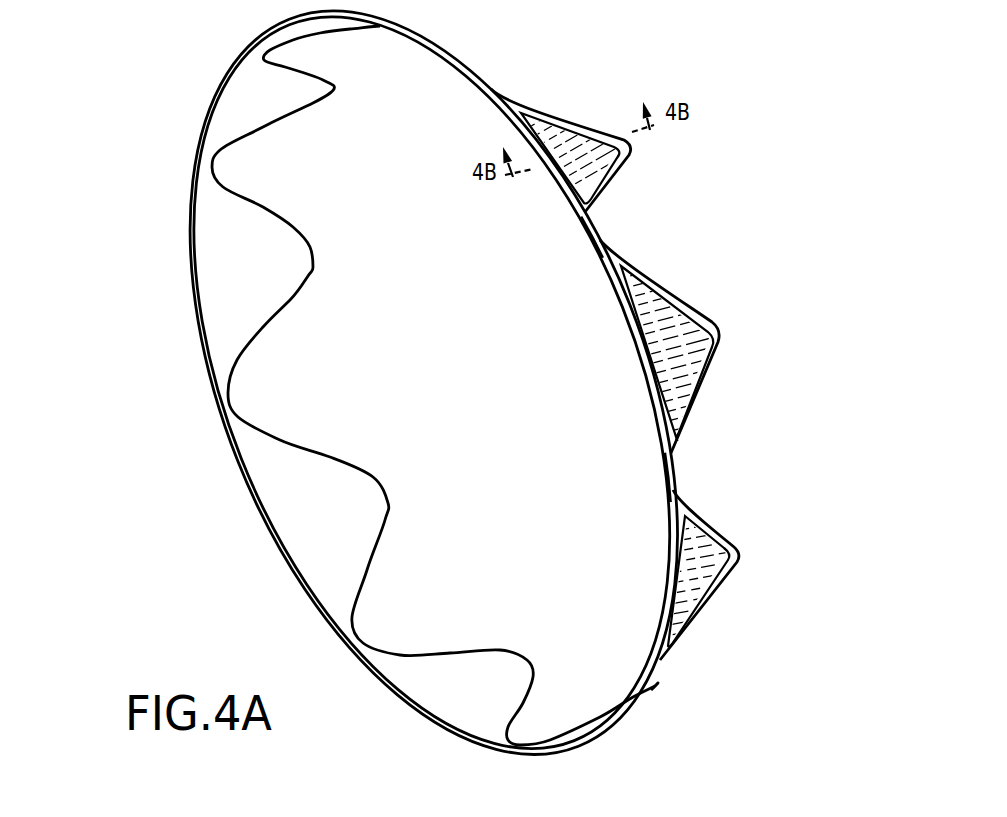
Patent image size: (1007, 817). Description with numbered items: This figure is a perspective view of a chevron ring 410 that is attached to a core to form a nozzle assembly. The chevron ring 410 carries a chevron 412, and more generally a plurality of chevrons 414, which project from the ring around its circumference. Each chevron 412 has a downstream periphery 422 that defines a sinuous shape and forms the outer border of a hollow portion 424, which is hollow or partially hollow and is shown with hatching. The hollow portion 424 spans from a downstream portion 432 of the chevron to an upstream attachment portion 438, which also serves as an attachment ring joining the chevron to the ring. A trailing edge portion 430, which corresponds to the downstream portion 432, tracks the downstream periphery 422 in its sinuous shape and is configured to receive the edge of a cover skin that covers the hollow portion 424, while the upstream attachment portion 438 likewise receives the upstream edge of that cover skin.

The chevron ring 410 is at (450, 408).
The chevron 412 is at (598, 160).
The plurality of chevrons 414 is at (703, 447).
The downstream periphery 422 is at (697, 413).
The hollow portion 424 is at (600, 181).
The trailing edge portion 430 is at (630, 158).
The downstream portion 432 is at (687, 438).
The upstream attachment portion 438 is at (571, 205).